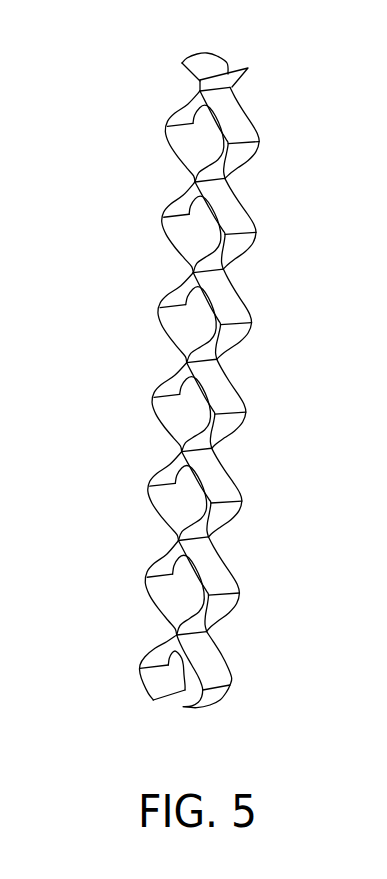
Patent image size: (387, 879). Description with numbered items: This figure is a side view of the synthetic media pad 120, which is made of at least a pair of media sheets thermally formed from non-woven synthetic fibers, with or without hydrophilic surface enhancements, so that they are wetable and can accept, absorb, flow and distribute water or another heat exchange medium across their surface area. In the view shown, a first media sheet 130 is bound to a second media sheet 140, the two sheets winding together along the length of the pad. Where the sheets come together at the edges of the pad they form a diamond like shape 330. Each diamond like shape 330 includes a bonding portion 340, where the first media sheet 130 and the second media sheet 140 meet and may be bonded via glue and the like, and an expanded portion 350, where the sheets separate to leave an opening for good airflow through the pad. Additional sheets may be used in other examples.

The synthetic media pad 120 is at (124, 56).
The first media sheet 130 is at (168, 121).
The second media sheet 140 is at (248, 117).
The diamond like shape 330 is at (245, 210).
The bonding portion 340 is at (230, 267).
The expanded portion 350 is at (250, 323).